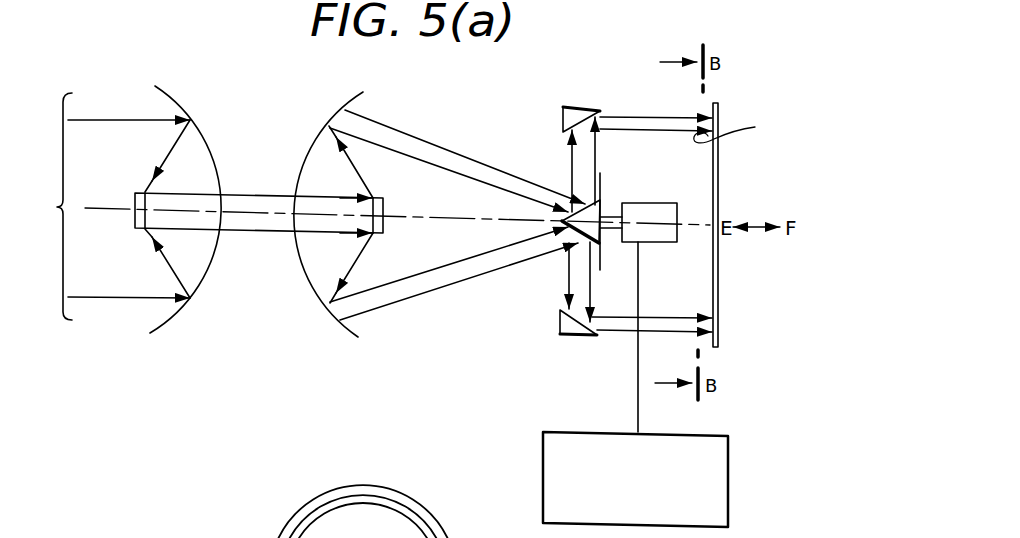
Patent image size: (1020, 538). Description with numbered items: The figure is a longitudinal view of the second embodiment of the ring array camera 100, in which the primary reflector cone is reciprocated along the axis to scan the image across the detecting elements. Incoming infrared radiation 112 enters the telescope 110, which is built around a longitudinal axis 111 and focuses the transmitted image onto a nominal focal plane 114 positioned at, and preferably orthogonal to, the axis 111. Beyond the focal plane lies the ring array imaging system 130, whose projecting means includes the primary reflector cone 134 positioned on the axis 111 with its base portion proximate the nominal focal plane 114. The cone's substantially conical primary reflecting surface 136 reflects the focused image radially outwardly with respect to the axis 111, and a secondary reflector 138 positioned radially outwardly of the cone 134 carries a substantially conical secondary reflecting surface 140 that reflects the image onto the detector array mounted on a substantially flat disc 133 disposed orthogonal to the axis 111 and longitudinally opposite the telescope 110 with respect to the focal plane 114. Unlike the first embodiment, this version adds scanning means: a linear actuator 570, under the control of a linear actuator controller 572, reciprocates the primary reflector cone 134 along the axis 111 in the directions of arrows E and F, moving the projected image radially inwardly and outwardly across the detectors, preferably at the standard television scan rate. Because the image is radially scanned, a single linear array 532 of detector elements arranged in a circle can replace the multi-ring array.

The ring array camera 100 is at (502, 105).
The telescope 110 is at (262, 275).
The longitudinal axis 111 is at (230, 213).
The incoming infrared radiation 112 is at (110, 206).
The nominal focal plane 114 is at (601, 262).
The ring array imaging system 130 is at (573, 350).
The disc 133 is at (721, 176).
The primary reflector cone 134 is at (569, 252).
The primary reflecting surface 136 is at (593, 210).
The secondary reflector 138 is at (584, 95).
The secondary reflecting surface 140 is at (597, 134).
The linear array 532 is at (243, 503).
The linear actuator 570 is at (663, 243).
The linear actuator controller 572 is at (730, 477).